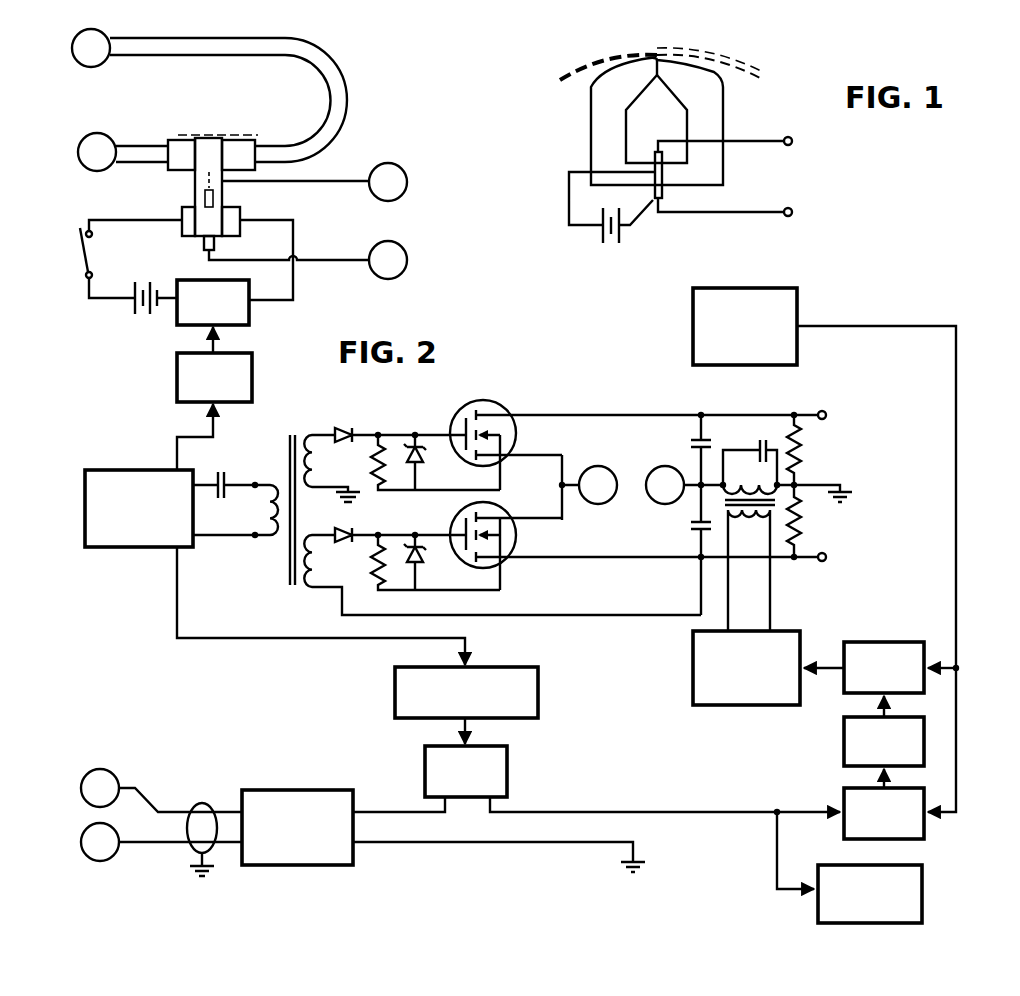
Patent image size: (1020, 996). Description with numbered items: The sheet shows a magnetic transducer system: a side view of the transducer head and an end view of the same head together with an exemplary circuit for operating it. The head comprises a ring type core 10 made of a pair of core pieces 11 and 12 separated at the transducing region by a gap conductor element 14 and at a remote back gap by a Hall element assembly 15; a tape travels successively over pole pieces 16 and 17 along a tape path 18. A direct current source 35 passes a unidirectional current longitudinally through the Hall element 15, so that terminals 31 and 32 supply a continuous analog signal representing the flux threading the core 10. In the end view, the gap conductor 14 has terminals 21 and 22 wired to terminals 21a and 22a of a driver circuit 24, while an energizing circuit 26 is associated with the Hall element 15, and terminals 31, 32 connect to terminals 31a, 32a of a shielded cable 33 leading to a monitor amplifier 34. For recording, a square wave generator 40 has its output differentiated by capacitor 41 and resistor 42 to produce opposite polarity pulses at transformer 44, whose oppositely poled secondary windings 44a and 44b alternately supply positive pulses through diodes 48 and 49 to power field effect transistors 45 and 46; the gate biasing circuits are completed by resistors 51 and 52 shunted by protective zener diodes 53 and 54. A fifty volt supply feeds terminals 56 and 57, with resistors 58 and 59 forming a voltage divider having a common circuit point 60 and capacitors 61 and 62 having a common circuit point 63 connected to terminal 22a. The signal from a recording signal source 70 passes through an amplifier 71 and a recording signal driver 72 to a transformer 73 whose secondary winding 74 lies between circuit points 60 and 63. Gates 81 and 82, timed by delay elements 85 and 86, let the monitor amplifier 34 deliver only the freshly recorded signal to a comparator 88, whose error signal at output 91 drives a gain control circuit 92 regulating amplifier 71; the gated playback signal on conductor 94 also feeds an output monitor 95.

In FIG. 1, the ring type core 10 is at (723, 126).
In FIG. 2, the ring type core 10 is at (186, 181).
In FIG. 1, the core piece 11 is at (609, 117).
In FIG. 1, the core piece 12 is at (711, 106).
In FIG. 2, the core piece 12 is at (212, 138).
In FIG. 1, the gap conductor element 14 is at (655, 70).
In FIG. 2, the gap conductor element 14 is at (331, 58).
In FIG. 1, the Hall element assembly 15 is at (653, 203).
In FIG. 2, the Hall element assembly 15 is at (183, 208).
In FIG. 1, the pole piece 16 is at (622, 68).
In FIG. 1, the pole piece 17 is at (705, 64).
In FIG. 1, the tape path 18 is at (745, 56).
In FIG. 2, the tape path 18 is at (245, 132).
In FIG. 2, the terminal 21 is at (106, 30).
In FIG. 2, the terminal 22 is at (110, 136).
In FIG. 2, the terminal 21a is at (608, 462).
In FIG. 2, the terminal 22a is at (673, 462).
In FIG. 2, the driver circuit 24 is at (630, 408).
In FIG. 2, the energizing circuit 26 is at (136, 320).
In FIG. 1, the terminal 31 is at (792, 144).
In FIG. 2, the terminal 31 is at (407, 184).
In FIG. 1, the terminal 32 is at (792, 212).
In FIG. 2, the terminal 32 is at (407, 258).
In FIG. 2, the terminal 31a is at (116, 776).
In FIG. 2, the terminal 32a is at (118, 856).
In FIG. 2, the shielded cable 33 is at (226, 848).
In FIG. 2, the monitor amplifier 34 is at (353, 800).
In FIG. 1, the direct current source 35 is at (600, 238).
In FIG. 2, the direct current source 35 is at (134, 308).
In FIG. 2, the square wave generator 40 is at (86, 494).
In FIG. 2, the capacitor 41 is at (224, 476).
In FIG. 2, the resistor 42 is at (250, 516).
In FIG. 2, the transformer 44 is at (290, 540).
In FIG. 2, the secondary winding 44a is at (312, 436).
In FIG. 2, the secondary winding 44b is at (310, 588).
In FIG. 2, the power field effect transistor 45 is at (493, 400).
In FIG. 2, the power field effect transistor 46 is at (500, 512).
In FIG. 2, the diode 48 is at (345, 430).
In FIG. 2, the diode 49 is at (350, 528).
In FIG. 2, the resistor 51 is at (372, 462).
In FIG. 2, the resistor 52 is at (372, 562).
In FIG. 2, the zener diode 53 is at (418, 460).
In FIG. 2, the zener diode 54 is at (418, 560).
In FIG. 2, the terminal 56 is at (822, 410).
In FIG. 2, the terminal 57 is at (826, 556).
In FIG. 2, the resistor 58 is at (802, 446).
In FIG. 2, the resistor 59 is at (803, 544).
In FIG. 2, the common circuit point 60 is at (804, 484).
In FIG. 2, the capacitor 61 is at (710, 442).
In FIG. 2, the capacitor 62 is at (694, 530).
In FIG. 2, the common circuit point 63 is at (694, 492).
In FIG. 2, the recording signal source 70 is at (752, 288).
In FIG. 2, the amplifier 71 is at (888, 642).
In FIG. 2, the recording signal driver 72 is at (792, 631).
In FIG. 2, the transformer 73 is at (762, 520).
In FIG. 2, the secondary winding 74 is at (747, 485).
In FIG. 2, the gate 81 is at (251, 306).
In FIG. 2, the gate 82 is at (508, 768).
In FIG. 2, the delay element 85 is at (253, 370).
In FIG. 2, the delay element 86 is at (540, 676).
In FIG. 2, the comparator 88 is at (844, 800).
In FIG. 2, the output 91 is at (882, 776).
In FIG. 2, the gain control circuit 92 is at (844, 738).
In FIG. 2, the conductor 94 is at (692, 812).
In FIG. 2, the output monitor 95 is at (880, 924).